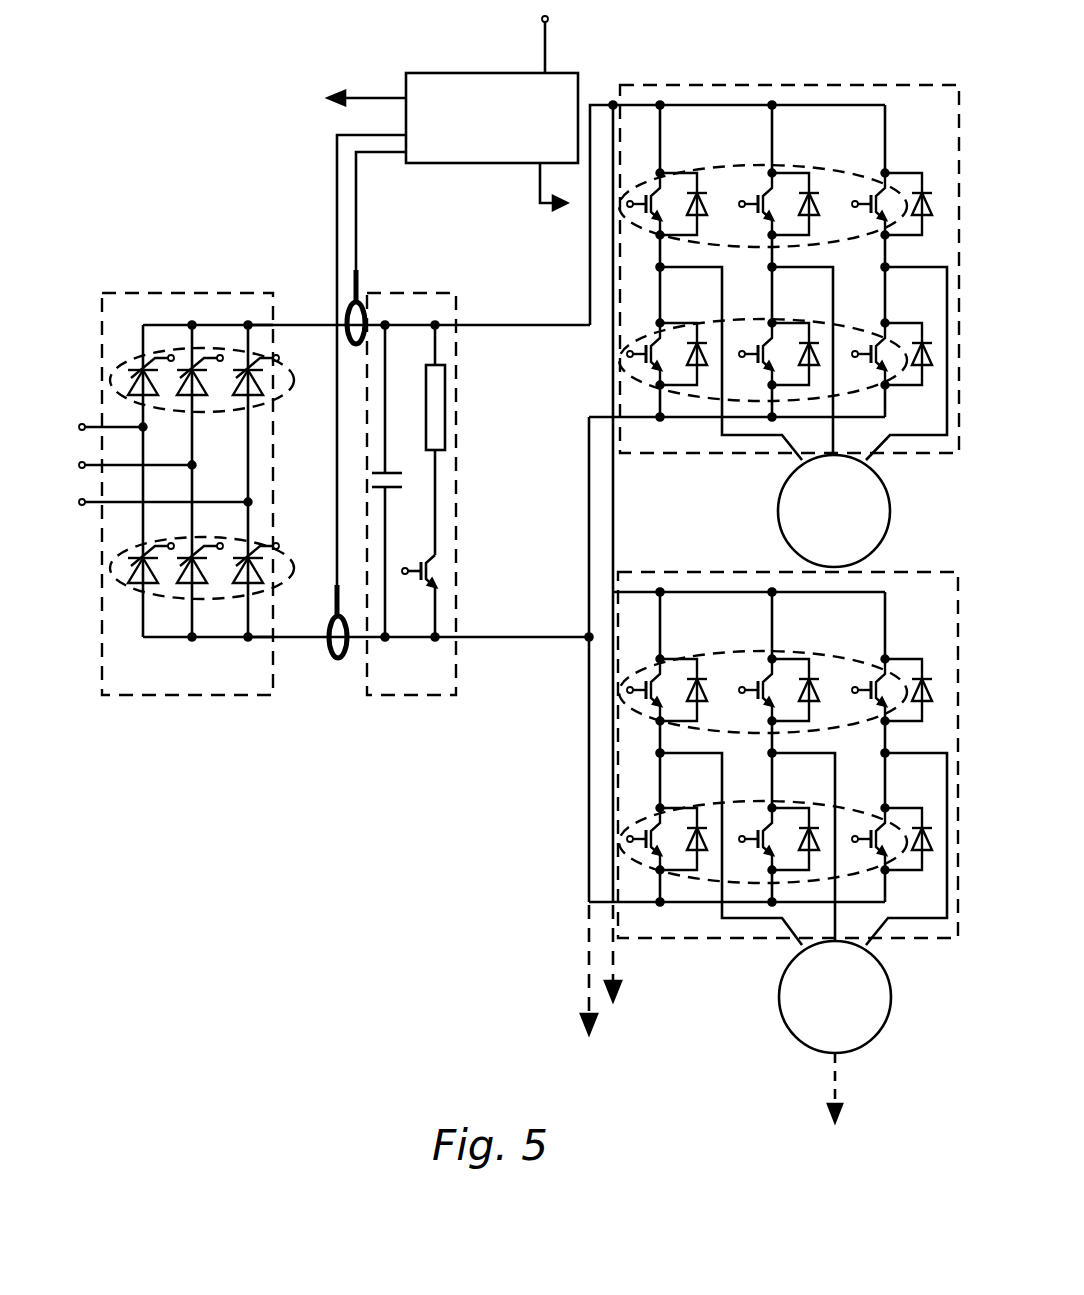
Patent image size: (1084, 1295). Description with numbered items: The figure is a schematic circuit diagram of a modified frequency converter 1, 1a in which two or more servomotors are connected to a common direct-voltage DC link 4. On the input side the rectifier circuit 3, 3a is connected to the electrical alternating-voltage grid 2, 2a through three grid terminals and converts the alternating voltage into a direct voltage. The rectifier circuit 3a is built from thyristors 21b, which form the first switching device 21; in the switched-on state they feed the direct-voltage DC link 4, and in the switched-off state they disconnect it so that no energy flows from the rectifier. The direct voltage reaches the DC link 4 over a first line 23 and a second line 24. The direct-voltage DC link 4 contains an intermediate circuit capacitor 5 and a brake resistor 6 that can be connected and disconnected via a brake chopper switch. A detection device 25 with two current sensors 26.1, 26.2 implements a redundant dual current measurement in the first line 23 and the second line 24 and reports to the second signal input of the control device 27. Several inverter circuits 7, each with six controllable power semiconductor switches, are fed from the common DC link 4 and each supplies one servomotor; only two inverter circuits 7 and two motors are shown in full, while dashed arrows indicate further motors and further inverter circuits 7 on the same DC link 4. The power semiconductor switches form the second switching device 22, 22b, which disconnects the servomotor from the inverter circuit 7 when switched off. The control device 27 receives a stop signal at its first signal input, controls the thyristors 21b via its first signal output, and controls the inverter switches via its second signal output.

The frequency converter 1 is at (501, 590).
The frequency converter 1a is at (198, 240).
The electrical alternating-voltage grid 2 is at (147, 387).
The alternating-voltage grid 2a is at (67, 400).
The rectifier circuit 3 is at (346, 519).
The rectifier circuit 3a is at (208, 697).
The direct-voltage DC link 4 is at (397, 697).
The intermediate circuit capacitor 5 is at (392, 473).
The brake resistor 6 is at (433, 374).
The inverter circuit 7 is at (815, 83).
The first switching device 21 is at (225, 467).
The thyristors 21b is at (280, 372).
The second switching device 22 is at (718, 524).
The second switching device 22b is at (627, 202).
The first line 23 is at (275, 325).
The second line 24 is at (273, 678).
The detection device 25 is at (392, 498).
The current sensor 26.1 is at (357, 302).
The current sensor 26.2 is at (345, 660).
The control device 27 is at (492, 78).